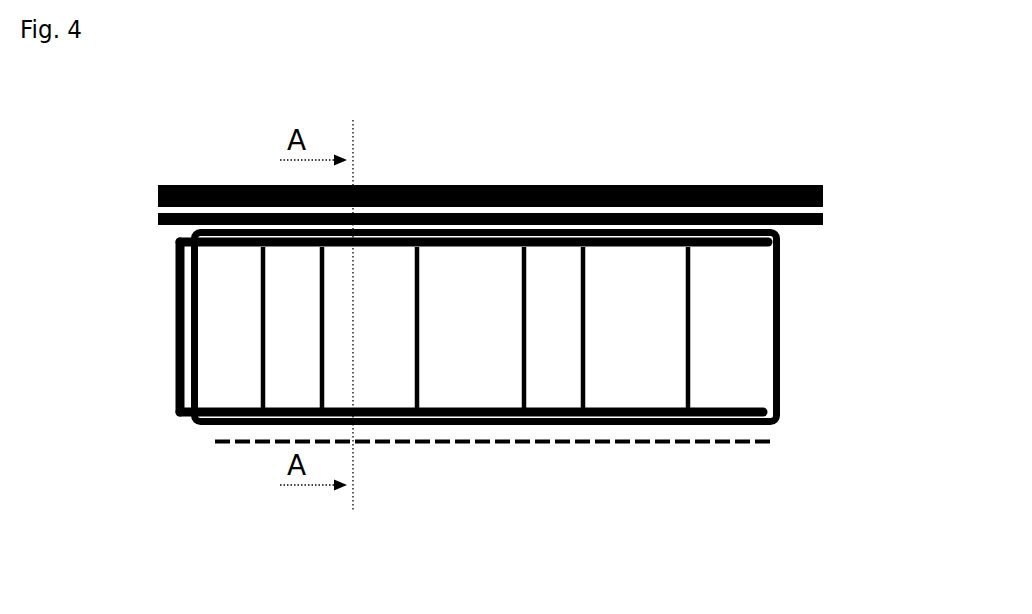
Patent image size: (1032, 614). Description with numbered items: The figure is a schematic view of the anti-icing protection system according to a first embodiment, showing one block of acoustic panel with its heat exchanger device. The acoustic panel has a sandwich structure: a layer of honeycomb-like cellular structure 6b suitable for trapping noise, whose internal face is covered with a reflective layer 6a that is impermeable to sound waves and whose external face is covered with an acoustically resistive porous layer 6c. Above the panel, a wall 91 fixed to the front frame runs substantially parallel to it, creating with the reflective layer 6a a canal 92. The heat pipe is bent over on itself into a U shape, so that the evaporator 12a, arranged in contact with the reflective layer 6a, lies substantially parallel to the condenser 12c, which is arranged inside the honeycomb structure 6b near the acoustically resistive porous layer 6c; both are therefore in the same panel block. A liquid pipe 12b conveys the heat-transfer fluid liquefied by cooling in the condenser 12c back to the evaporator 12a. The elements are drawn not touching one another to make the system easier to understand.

The reflective layer 6a is at (160, 219).
The honeycomb-like cellular structure 6b is at (765, 347).
The acoustically resistive porous layer 6c is at (237, 442).
The evaporator 12a is at (782, 252).
The liquid pipe 12b is at (175, 313).
The condenser 12c is at (653, 417).
The wall 91 is at (672, 184).
The canal 92 is at (824, 211).